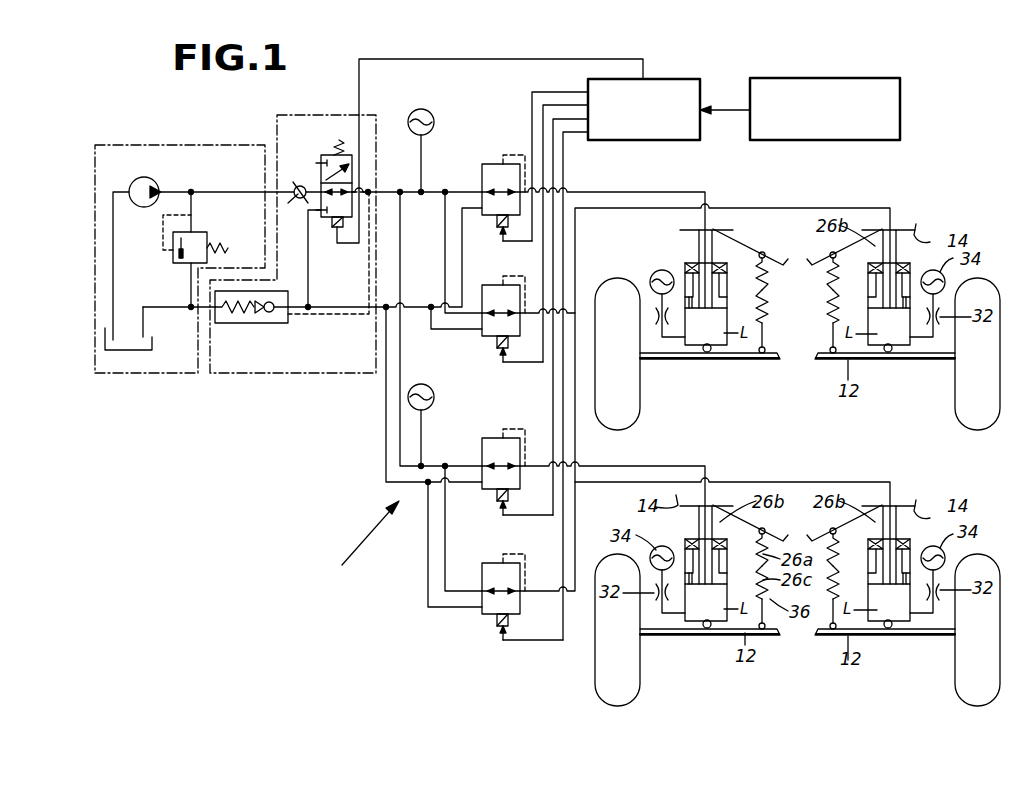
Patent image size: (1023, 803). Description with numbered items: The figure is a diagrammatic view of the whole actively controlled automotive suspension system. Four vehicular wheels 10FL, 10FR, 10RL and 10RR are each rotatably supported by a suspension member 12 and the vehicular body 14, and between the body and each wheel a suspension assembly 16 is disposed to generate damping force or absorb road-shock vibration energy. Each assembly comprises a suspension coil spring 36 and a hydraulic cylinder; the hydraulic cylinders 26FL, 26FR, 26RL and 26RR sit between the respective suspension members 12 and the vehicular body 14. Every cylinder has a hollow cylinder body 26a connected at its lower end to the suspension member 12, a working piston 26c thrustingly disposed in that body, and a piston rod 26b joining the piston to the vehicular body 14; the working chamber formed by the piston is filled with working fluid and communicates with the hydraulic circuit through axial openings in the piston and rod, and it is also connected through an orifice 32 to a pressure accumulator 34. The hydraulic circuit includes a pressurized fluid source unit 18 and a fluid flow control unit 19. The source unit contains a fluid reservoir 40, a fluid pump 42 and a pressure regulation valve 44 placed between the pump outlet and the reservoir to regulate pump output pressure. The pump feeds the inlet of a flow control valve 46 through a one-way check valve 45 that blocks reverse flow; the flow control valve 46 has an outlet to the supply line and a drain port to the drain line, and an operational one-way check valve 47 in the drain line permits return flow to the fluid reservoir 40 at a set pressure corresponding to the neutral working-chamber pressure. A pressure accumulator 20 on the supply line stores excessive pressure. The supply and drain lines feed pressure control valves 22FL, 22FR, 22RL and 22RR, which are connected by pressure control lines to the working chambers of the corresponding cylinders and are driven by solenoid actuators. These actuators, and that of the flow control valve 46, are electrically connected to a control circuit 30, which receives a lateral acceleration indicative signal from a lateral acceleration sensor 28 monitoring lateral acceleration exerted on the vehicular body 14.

The front-left vehicular wheel 10FL is at (646, 365).
The front-right vehicular wheel 10FR is at (962, 420).
The rear-left vehicular wheel 10RL is at (641, 690).
The rear-right vehicular wheel 10RR is at (960, 686).
The suspension member 12 is at (710, 378).
The vehicular body 14 is at (689, 237).
The suspension assembly 16 is at (332, 580).
The pressurized fluid source unit 18 is at (152, 376).
The fluid flow control unit 19 is at (281, 376).
The pressure accumulator 20 is at (429, 113).
The front-left pressure control valve 22FL is at (498, 229).
The front-right pressure control valve 22FR is at (498, 351).
The rear-left pressure control valve 22RL is at (498, 503).
The rear-right pressure control valve 22RR is at (498, 628).
The front-left hydraulic cylinder 26FL is at (691, 317).
The front-right hydraulic cylinder 26FR is at (896, 352).
The rear-left hydraulic cylinder 26RL is at (692, 628).
The rear-right hydraulic cylinder 26RR is at (896, 628).
The hollow cylinder body 26a is at (784, 276).
The piston rod 26b is at (751, 240).
The working piston 26c is at (784, 306).
The lateral acceleration sensor 28 is at (813, 78).
The control circuit 30 is at (670, 78).
The orifice 32 is at (634, 316).
The pressure accumulator 34 is at (651, 294).
The suspension coil spring 36 is at (785, 338).
The fluid reservoir 40 is at (153, 345).
The fluid pump 42 is at (147, 178).
The pressure regulation valve 44 is at (205, 232).
The one-way check valve 45 is at (298, 185).
The flow control valve 46 is at (330, 153).
The operational one-way check valve 47 is at (262, 325).